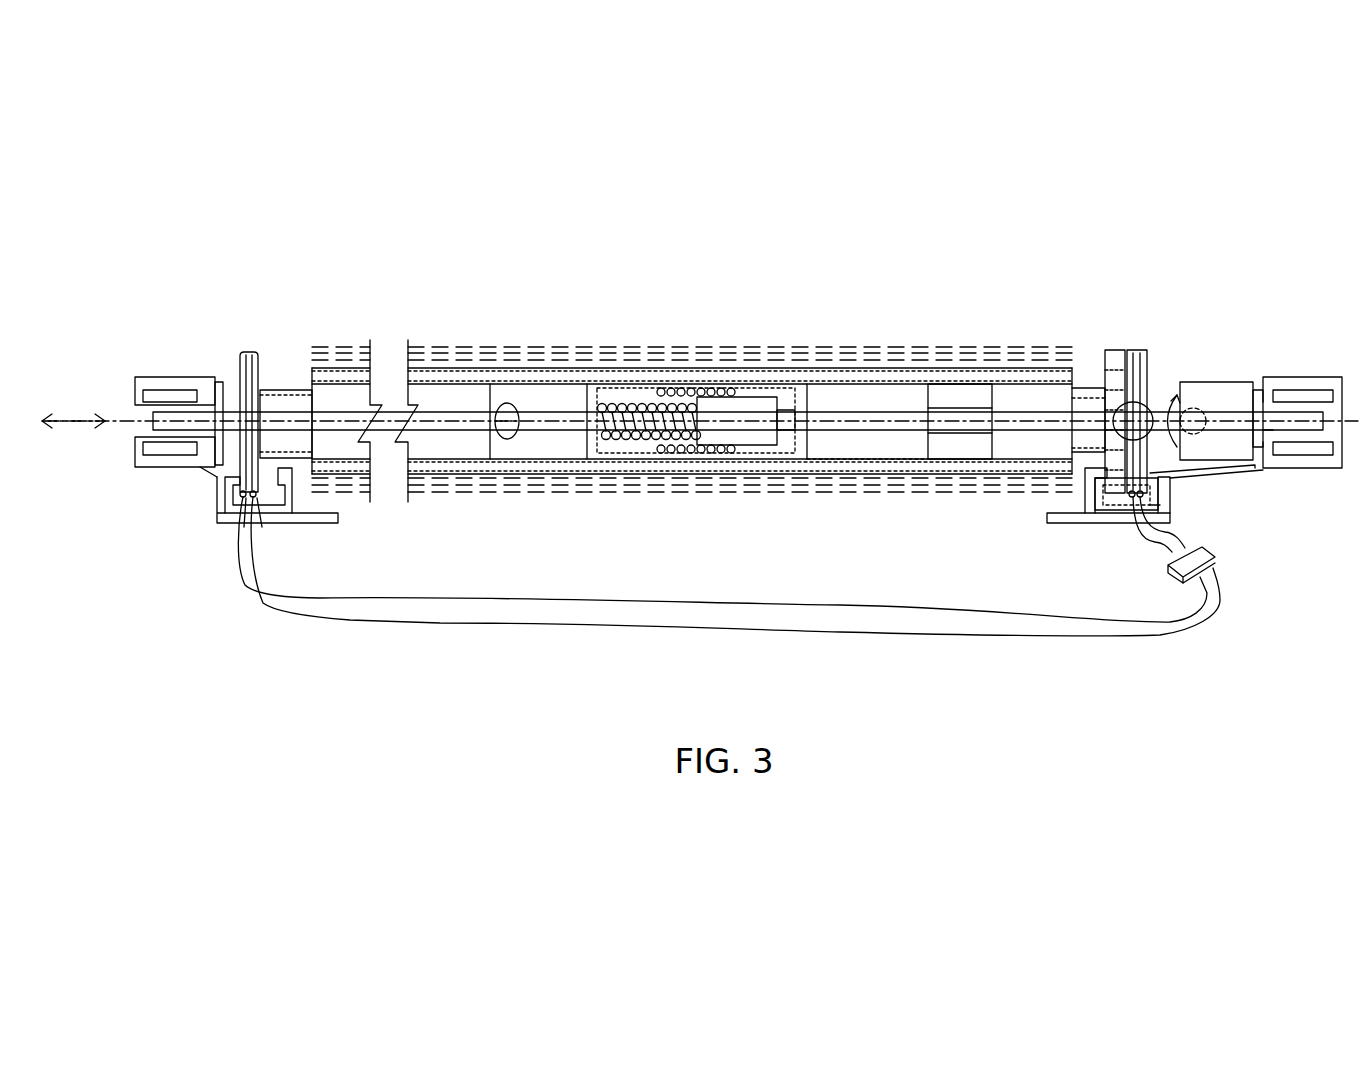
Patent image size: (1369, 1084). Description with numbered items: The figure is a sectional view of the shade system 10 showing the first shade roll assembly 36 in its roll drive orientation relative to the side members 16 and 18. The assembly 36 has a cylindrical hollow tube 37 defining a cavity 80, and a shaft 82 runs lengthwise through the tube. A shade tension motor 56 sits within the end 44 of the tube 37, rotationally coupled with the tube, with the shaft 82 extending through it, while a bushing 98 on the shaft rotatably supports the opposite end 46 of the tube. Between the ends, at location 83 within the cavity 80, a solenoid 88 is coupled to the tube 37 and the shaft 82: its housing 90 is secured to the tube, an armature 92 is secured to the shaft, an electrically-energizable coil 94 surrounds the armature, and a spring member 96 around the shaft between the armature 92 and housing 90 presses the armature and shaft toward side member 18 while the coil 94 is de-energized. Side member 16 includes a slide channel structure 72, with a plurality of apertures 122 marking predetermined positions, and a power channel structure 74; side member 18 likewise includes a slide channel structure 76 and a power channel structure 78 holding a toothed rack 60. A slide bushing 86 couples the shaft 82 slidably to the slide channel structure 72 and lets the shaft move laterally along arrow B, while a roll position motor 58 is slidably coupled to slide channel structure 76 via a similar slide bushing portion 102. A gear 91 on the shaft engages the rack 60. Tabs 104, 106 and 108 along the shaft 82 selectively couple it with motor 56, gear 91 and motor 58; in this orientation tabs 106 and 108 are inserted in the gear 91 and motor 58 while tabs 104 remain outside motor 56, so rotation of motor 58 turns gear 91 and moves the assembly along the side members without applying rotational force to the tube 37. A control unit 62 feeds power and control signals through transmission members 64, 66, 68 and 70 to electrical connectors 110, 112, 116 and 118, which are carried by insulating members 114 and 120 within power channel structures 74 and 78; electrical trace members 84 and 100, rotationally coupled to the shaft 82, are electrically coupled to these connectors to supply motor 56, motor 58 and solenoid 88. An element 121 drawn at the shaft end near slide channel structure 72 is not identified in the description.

The shade system 10 is at (245, 282).
The side member 16 is at (212, 540).
The side member 18 is at (1063, 518).
The first shade roll assembly 36 is at (440, 320).
The cylindrical hollow tube 37 is at (305, 372).
The end 44 is at (300, 330).
The end 46 is at (1075, 330).
The shade tension motor 56 is at (330, 400).
The roll position motor 58 is at (1240, 380).
The rack 60 is at (1117, 493).
The control unit 62 is at (1175, 573).
The transmission member 64 is at (668, 626).
The transmission member 66 is at (680, 598).
The transmission member 68 is at (1135, 497).
The transmission member 70 is at (1190, 547).
The slide channel structure 72 is at (155, 378).
The power channel structure 74 is at (335, 523).
The slide channel structure 76 is at (1305, 377).
The power channel structure 78 is at (1180, 482).
The cavity 80 is at (555, 387).
The shaft 82 is at (575, 417).
The location 83 is at (785, 465).
The electrical trace member 84 is at (252, 350).
The slide bushing 86 is at (222, 383).
The solenoid 88 is at (590, 363).
The housing 90 is at (800, 392).
The gear 91 is at (1118, 350).
The armature 92 is at (753, 402).
The electrically-energizable coil 94 is at (697, 392).
The spring member 96 is at (630, 433).
The bushing 98 is at (940, 392).
The electrical trace member 100 is at (1140, 345).
The slide bushing portion 102 is at (1267, 437).
The tabs 104 is at (507, 438).
The tab 106 is at (1103, 434).
The tab 108 is at (1173, 398).
The electrical connector 110 is at (243, 494).
The electrical connector 112 is at (255, 500).
The insulating member 114 is at (278, 502).
The electrical connector 116 is at (1130, 497).
The electrical connector 118 is at (1160, 508).
The insulating member 120 is at (1103, 503).
The rod 121 is at (162, 428).
The apertures 122 is at (128, 410).